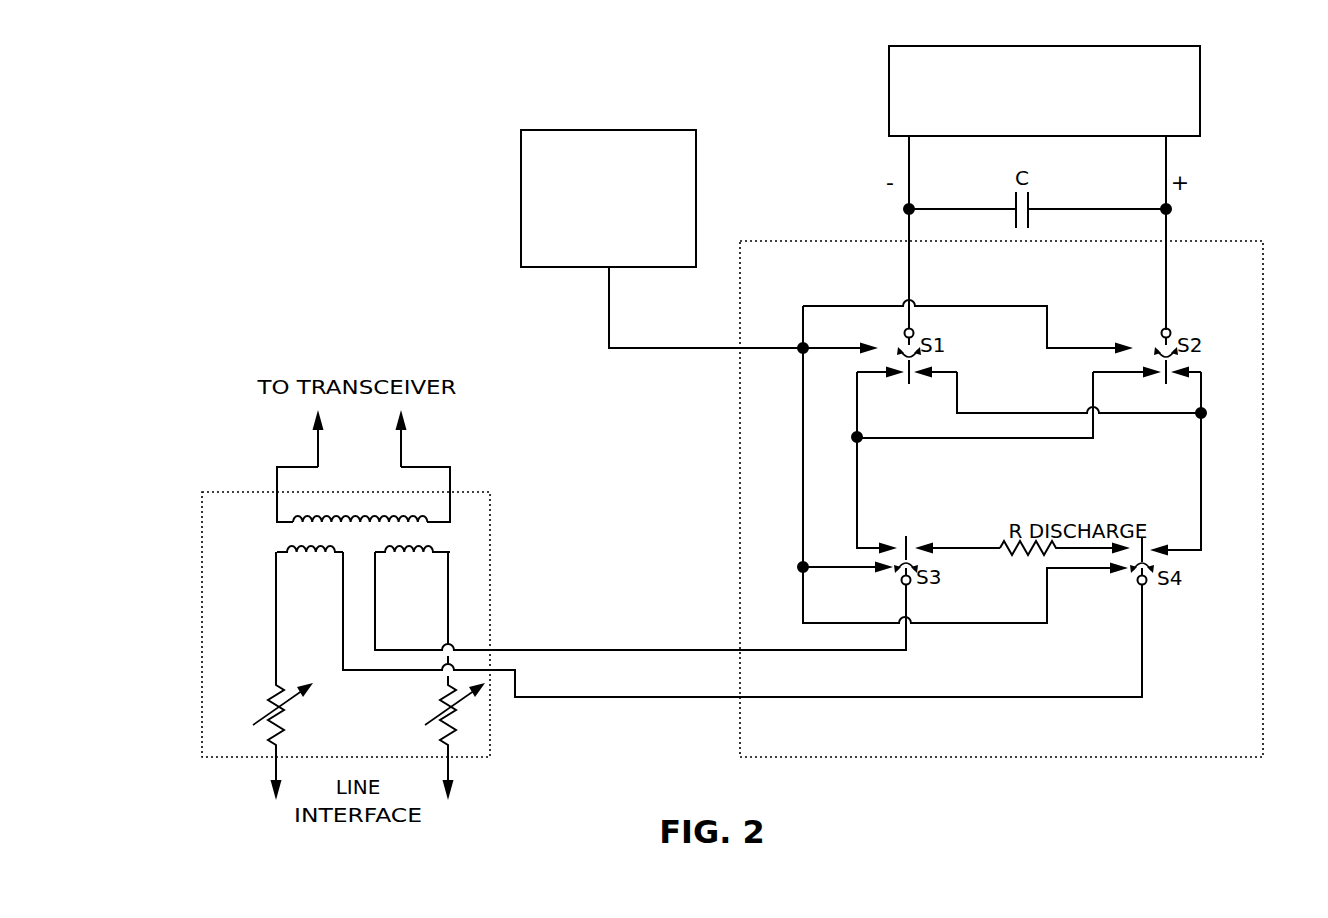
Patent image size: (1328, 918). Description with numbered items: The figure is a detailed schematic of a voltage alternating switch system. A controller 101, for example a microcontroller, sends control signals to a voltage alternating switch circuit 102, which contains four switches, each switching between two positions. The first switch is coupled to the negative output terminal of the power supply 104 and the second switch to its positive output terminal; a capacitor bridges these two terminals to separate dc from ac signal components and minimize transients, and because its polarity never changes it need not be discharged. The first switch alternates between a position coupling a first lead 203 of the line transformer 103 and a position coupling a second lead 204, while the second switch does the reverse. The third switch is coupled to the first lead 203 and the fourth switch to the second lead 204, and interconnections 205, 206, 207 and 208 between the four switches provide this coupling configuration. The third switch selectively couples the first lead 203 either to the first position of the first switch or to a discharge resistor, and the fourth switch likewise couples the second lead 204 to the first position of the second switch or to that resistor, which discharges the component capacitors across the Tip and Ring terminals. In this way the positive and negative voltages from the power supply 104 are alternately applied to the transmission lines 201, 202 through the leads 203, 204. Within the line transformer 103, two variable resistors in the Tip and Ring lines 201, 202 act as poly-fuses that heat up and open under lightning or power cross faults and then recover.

The controller 101 is at (521, 172).
The voltage alternating switch circuit 102 is at (1263, 372).
The line transformer 103 is at (196, 642).
The power supply 104 is at (1202, 93).
The transmission line 201 is at (272, 773).
The transmission line 202 is at (452, 770).
The first lead 203 is at (592, 650).
The second lead 204 is at (593, 698).
The interconnection 205 is at (858, 517).
The interconnection 206 is at (1203, 500).
The interconnection 207 is at (985, 440).
The interconnection 208 is at (1030, 412).